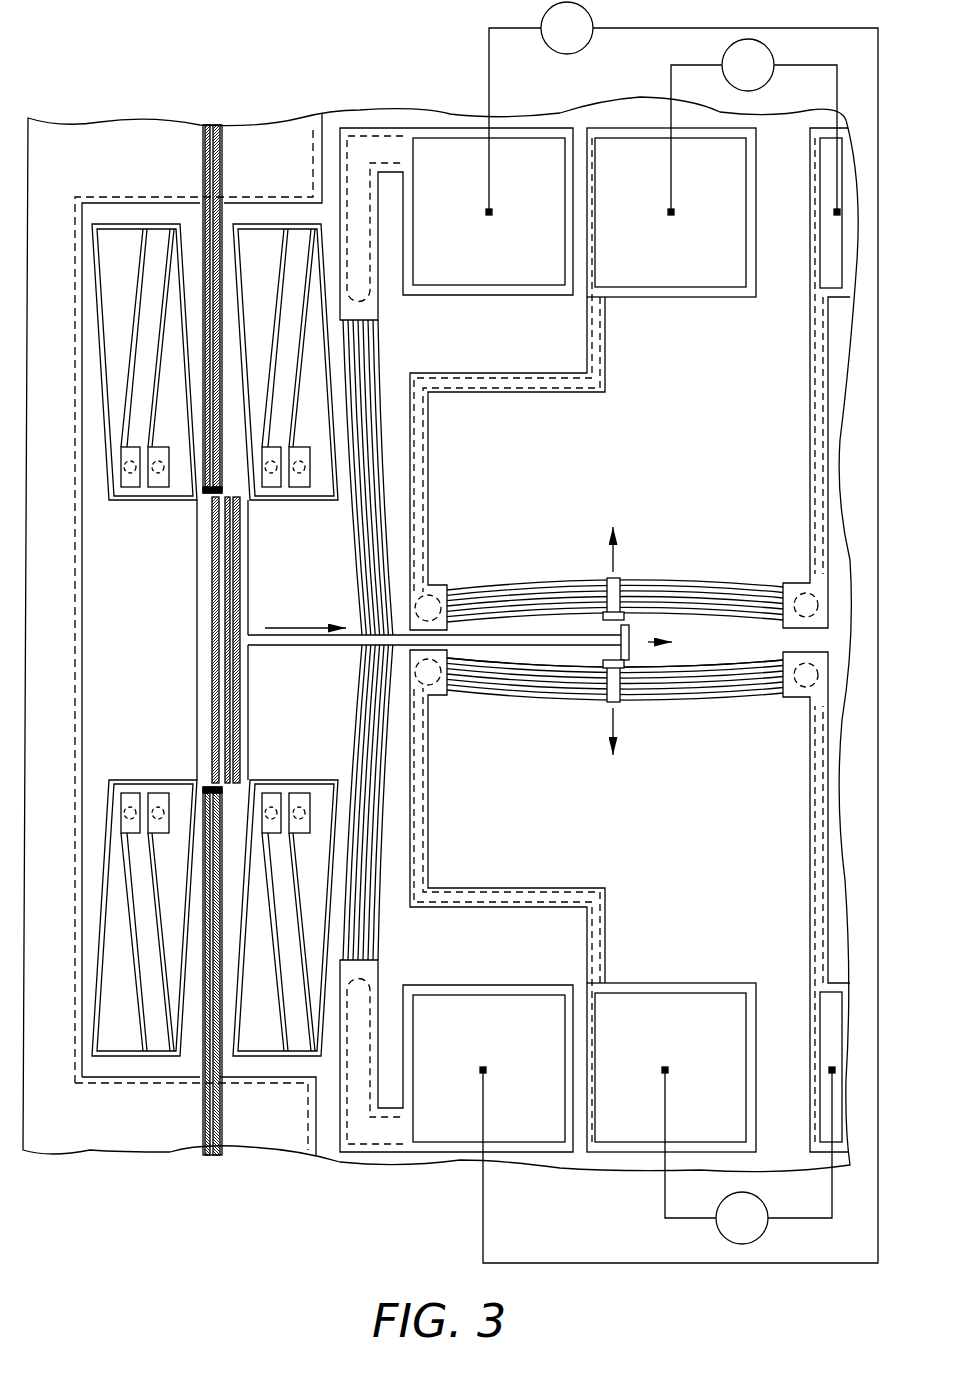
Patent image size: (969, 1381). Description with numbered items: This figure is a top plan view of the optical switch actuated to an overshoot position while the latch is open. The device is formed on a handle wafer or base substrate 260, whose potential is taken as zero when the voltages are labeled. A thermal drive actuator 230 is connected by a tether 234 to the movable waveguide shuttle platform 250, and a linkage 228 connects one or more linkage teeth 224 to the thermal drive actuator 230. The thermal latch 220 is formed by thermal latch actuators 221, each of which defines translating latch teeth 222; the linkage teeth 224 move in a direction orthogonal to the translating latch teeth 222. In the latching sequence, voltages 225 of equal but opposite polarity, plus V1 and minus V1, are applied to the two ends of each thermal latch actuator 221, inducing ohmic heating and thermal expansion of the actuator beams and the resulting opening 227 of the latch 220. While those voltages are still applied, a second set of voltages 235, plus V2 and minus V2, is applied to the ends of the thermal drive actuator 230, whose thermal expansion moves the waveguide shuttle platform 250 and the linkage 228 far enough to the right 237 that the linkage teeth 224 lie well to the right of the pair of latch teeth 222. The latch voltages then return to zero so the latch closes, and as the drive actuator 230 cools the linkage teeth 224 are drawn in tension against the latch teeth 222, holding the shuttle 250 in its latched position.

The thermal latch 220 is at (665, 530).
The thermal latch actuator 221 is at (587, 585).
The latch teeth 222 is at (620, 618).
The linkage teeth 224 is at (632, 632).
The voltages 225 is at (760, 88).
The opening of the latch 227 is at (611, 556).
The linkage 228 is at (515, 660).
The thermal drive actuator 230 is at (345, 683).
The tether 234 is at (271, 637).
The second set of voltages 235 is at (573, 53).
The direction of drive actuator movement 237 is at (290, 628).
The movable waveguide shuttle platform 250 is at (145, 640).
The base substrate 260 is at (408, 108).